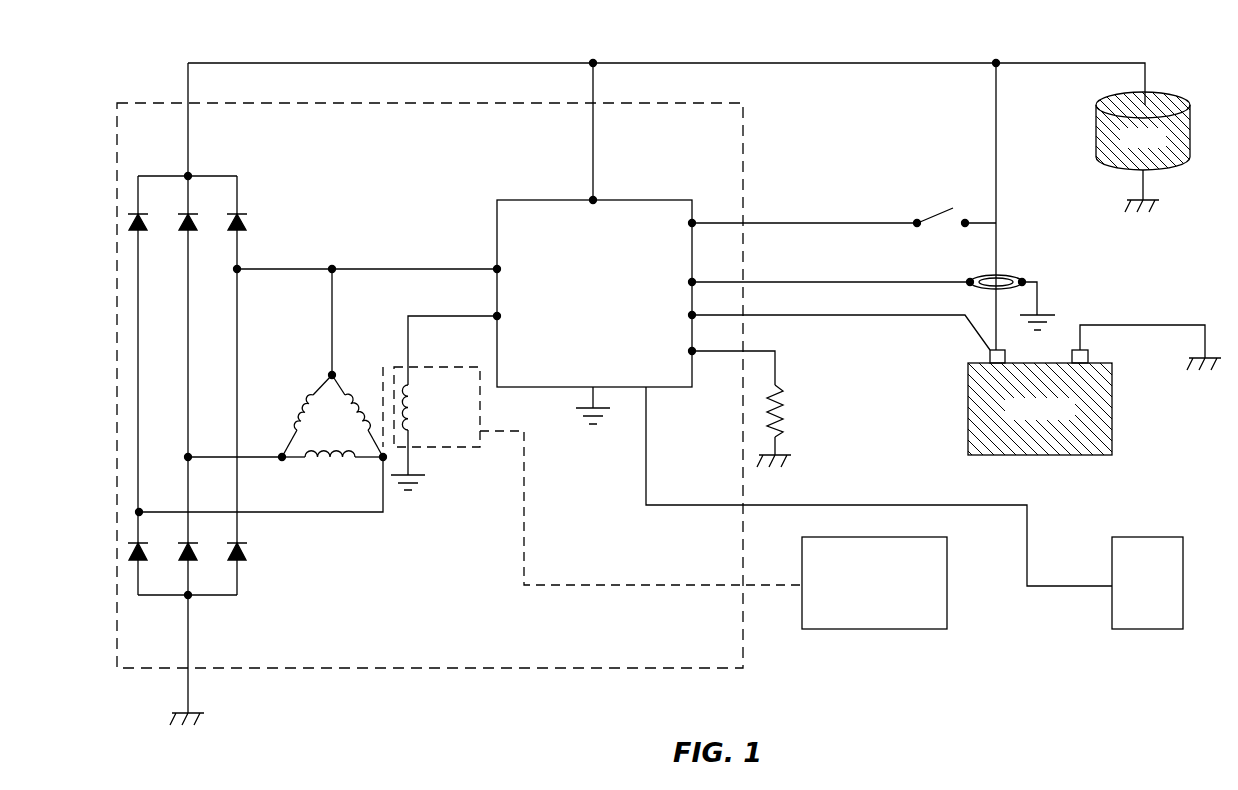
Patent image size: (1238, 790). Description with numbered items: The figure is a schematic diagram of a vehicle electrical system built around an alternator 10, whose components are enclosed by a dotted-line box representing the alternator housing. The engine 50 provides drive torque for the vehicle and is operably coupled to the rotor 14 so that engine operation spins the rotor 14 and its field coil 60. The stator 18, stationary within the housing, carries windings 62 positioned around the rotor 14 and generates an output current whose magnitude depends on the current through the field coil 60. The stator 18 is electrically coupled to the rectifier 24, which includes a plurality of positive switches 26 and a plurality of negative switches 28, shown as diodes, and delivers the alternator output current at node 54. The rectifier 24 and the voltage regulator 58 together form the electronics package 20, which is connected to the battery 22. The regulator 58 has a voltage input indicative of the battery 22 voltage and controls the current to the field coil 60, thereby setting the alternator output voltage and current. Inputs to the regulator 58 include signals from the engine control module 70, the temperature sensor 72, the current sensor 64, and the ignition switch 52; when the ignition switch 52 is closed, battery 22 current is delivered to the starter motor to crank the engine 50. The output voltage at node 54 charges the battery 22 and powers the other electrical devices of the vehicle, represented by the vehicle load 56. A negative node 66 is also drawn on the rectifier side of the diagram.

The alternator 10 is at (400, 103).
The rotor 14 is at (440, 403).
The stator 18 is at (318, 405).
The electronics package 20 is at (304, 237).
The battery 22 is at (1087, 455).
The rectifier 24 is at (167, 394).
The positive switches 26 is at (130, 226).
The negative switches 28 is at (135, 549).
The engine 50 is at (898, 629).
The ignition switch 52 is at (940, 216).
The node 54 is at (190, 175).
The vehicle load 56 is at (1172, 165).
The voltage regulator 58 is at (552, 200).
The field coil 60 is at (410, 392).
The windings 62 is at (333, 374).
The current sensor 64 is at (1010, 275).
The negative node 66 is at (195, 598).
The engine control module 70 is at (1153, 629).
The temperature sensor 72 is at (782, 412).